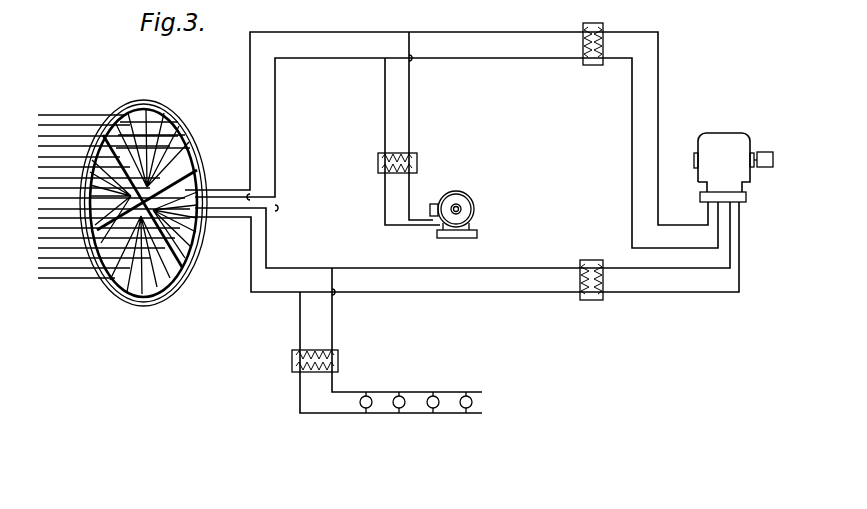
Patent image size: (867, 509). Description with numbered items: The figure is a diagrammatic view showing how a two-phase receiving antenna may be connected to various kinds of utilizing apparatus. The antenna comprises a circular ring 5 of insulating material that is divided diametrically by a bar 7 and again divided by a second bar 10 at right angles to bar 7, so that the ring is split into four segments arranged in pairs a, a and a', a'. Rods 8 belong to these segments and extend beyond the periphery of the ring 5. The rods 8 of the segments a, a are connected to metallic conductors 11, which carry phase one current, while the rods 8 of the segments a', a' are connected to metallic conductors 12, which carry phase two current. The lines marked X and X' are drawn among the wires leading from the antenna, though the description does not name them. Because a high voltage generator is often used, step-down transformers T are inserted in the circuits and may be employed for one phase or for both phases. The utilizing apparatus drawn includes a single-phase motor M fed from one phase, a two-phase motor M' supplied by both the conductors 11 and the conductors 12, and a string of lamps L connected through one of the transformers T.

The circular ring 5 is at (134, 100).
The bar 7 is at (190, 170).
The rods 8 is at (170, 137).
The second bar 10 is at (182, 285).
The metallic conductors 11 is at (275, 126).
The metallic conductors 12 is at (267, 238).
The cross-connected wires X is at (114, 196).
The cross-connected wires X' is at (60, 199).
The segments a is at (138, 220).
The segments a' is at (155, 207).
The step-down transformers T is at (437, 189).
The single-phase motor M is at (463, 214).
The two-phase motor M' is at (735, 167).
The string of lamps L is at (416, 413).